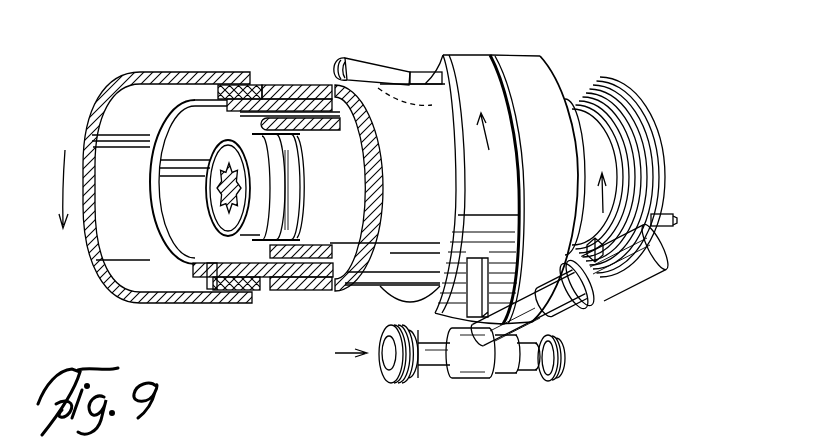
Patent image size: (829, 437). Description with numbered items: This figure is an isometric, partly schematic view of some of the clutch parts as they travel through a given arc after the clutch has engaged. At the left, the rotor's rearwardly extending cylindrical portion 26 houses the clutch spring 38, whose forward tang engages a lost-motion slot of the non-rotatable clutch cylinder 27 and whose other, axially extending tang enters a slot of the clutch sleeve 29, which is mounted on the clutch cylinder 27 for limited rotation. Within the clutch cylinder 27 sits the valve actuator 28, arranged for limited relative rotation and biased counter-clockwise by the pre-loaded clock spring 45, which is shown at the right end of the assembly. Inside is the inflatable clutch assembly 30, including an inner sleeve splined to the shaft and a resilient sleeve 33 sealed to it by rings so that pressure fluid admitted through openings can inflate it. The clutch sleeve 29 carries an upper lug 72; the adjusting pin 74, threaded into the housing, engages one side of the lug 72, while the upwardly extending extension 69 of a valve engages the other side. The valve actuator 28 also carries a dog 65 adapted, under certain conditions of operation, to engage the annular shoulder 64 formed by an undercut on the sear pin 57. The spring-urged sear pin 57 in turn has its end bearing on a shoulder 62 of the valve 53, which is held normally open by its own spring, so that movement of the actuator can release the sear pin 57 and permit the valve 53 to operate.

The cylindrical portion 26 is at (156, 72).
The clutch spring 38 is at (258, 85).
The valve actuator 28 is at (285, 125).
The clutch cylinder 27 is at (537, 64).
The adjusting pin 74 is at (374, 58).
The clock spring 45 is at (648, 127).
The resilient sleeve 33 is at (345, 178).
The clutch sleeve 29 is at (432, 176).
The upper lug 72 is at (507, 181).
The inflatable clutch assembly 30 is at (205, 220).
The dog 65 is at (590, 240).
The extension 69 is at (492, 265).
The sear pin 57 is at (653, 275).
The annular shoulder 64 is at (618, 293).
The valve 53 is at (558, 370).
The shoulder 62 is at (487, 377).